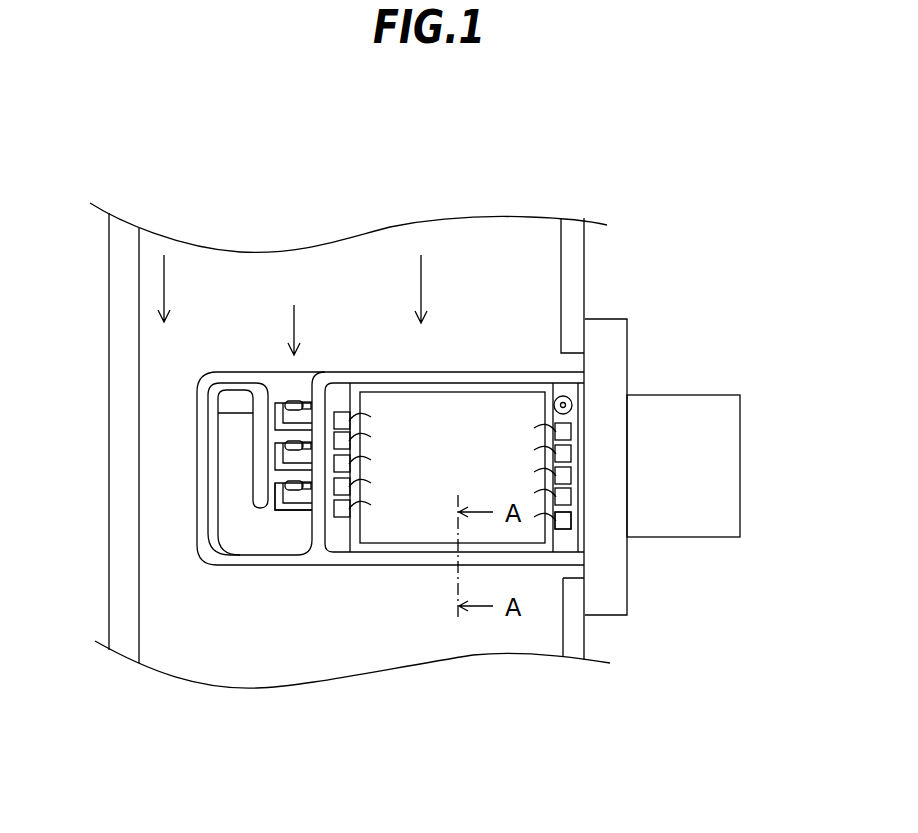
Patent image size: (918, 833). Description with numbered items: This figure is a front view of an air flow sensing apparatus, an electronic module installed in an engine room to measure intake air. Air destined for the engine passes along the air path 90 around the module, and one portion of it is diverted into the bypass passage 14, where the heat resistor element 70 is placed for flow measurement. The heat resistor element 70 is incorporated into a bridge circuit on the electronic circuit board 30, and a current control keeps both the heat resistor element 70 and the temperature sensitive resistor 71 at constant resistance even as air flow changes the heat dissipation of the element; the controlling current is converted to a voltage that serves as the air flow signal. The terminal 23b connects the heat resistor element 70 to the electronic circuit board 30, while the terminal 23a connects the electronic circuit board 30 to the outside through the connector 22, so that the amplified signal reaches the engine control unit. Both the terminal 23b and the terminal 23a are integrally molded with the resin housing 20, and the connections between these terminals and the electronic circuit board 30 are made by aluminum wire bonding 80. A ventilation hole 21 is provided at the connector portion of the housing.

The air path 90 is at (500, 228).
The resin housing 20 is at (318, 557).
The bypass passage 14 is at (218, 482).
The temperature sensitive resistor 71 is at (292, 447).
The heat resistor element 70 is at (293, 492).
The terminal 23b is at (282, 505).
The aluminum wire bonding 80 is at (362, 507).
The terminal 23a is at (563, 527).
The electronic circuit board 30 is at (422, 532).
The ventilation hole 21 is at (565, 398).
The connector 22 is at (731, 440).